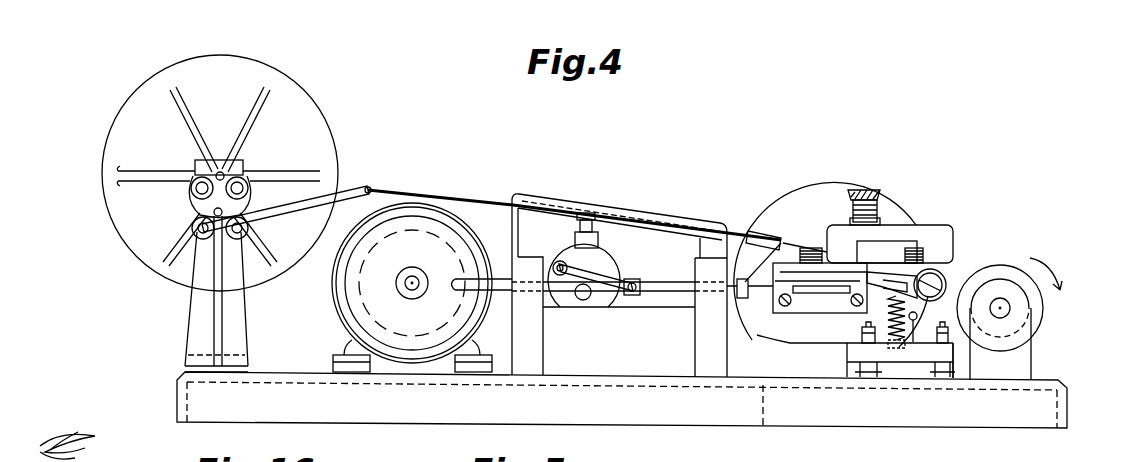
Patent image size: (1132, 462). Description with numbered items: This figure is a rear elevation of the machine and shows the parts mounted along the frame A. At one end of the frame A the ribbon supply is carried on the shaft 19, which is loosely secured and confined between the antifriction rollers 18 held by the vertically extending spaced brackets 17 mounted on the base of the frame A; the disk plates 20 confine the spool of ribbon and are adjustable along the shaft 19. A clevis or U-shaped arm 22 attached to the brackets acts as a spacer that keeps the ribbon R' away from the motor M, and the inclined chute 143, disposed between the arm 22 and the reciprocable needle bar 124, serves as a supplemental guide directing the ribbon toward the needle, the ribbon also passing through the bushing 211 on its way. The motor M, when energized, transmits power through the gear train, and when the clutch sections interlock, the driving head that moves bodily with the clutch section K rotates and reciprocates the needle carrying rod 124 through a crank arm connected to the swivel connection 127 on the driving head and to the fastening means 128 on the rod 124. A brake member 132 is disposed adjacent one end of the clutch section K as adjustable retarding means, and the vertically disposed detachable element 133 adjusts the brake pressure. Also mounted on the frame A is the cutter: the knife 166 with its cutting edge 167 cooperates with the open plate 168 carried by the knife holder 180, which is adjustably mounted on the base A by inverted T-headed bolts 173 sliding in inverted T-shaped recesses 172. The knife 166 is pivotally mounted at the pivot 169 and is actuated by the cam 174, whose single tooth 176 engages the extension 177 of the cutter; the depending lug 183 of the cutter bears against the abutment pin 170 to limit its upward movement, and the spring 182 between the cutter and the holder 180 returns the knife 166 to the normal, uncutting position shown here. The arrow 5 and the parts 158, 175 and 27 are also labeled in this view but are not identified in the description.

The frame A is at (1073, 387).
The disk plates 20 is at (290, 87).
The shaft 19 is at (220, 155).
The antifriction rollers 18 is at (267, 177).
The vertical extending spaced brackets 17 is at (190, 309).
The clevis or U-shaped arm 22 is at (348, 192).
The rod R' is at (597, 309).
The motor M is at (418, 212).
The needle carrying rod 124 is at (678, 283).
The inclined chute 143 is at (652, 213).
The clutch section K is at (613, 268).
The brake member 132 is at (575, 232).
The vertical disposed detachable element 133 is at (587, 214).
The swivel connection 127 is at (558, 262).
The fastening means 128 is at (641, 282).
The knife 166 is at (848, 268).
The knob 158 is at (870, 190).
The knife holder 180 is at (790, 325).
The bushing 211 is at (743, 300).
The cutting edge 167 is at (870, 272).
The open plate 168 is at (885, 268).
The pivot 169 is at (940, 262).
The abutment pin 170 is at (898, 340).
The yieldable resistant spring 182 is at (882, 330).
The lug or projection 183 is at (912, 336).
The inverted T-shaped recesses 172 is at (942, 345).
The inverted T-headed bolts 173 is at (953, 345).
The cam 174 is at (1043, 308).
The extension 177 is at (1005, 300).
The pulley housing 175 is at (1027, 360).
The belt 27 is at (1033, 262).
The direction arrow 5 is at (1048, 264).
The single tooth 176 is at (1045, 287).